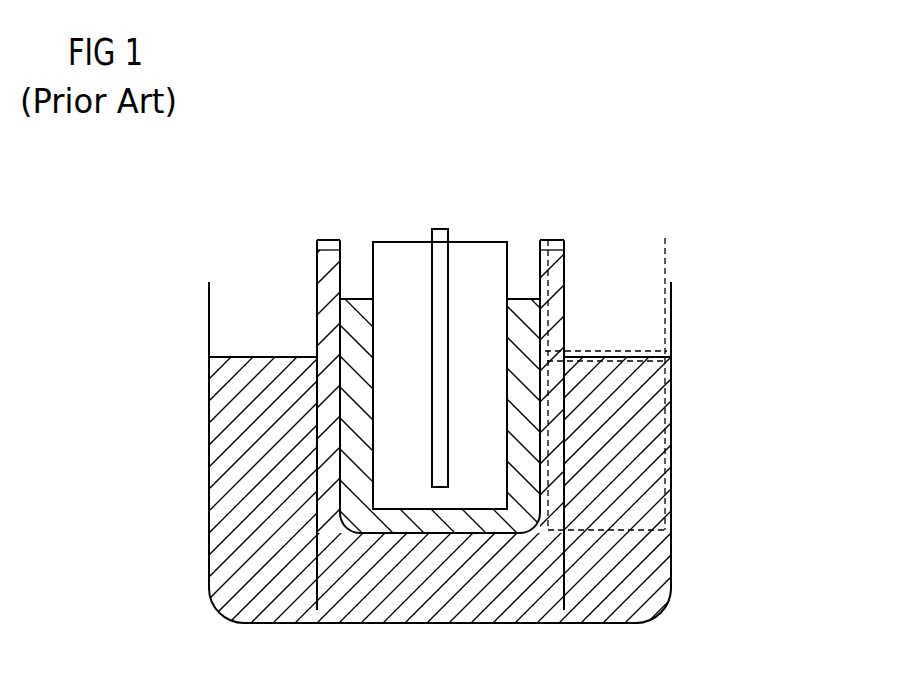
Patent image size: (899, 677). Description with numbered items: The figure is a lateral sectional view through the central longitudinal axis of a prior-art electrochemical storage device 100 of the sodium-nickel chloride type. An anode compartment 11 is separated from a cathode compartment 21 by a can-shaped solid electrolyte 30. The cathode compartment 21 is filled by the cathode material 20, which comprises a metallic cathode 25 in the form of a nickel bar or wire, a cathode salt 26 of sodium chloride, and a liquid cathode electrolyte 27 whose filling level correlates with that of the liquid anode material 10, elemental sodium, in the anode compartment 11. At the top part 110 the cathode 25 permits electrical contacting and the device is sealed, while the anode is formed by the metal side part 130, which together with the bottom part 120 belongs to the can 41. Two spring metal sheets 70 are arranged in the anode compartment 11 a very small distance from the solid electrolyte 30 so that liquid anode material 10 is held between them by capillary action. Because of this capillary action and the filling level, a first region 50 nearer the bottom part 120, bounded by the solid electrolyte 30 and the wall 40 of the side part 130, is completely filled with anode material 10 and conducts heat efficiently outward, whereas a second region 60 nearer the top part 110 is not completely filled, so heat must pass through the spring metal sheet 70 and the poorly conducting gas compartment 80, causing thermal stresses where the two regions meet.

The anode material 10 is at (330, 396).
The anode compartment 11 is at (285, 507).
The cathode material 20 is at (432, 232).
The cathode compartment 21 is at (420, 395).
The cathode 25 is at (440, 358).
The cathode salt 26 is at (477, 258).
The cathode electrolyte 27 is at (520, 300).
The solid electrolyte 30 is at (318, 253).
The wall 40 is at (209, 380).
The can 41 is at (665, 610).
The first region 50 is at (672, 428).
The second region 60 is at (665, 256).
The spring metal sheet 70 is at (373, 299).
The gas compartment 80 is at (653, 315).
The electrochemical storage device 100 is at (722, 188).
The top part 110 is at (737, 231).
The bottom part 120 is at (204, 624).
The side part 130 is at (184, 436).